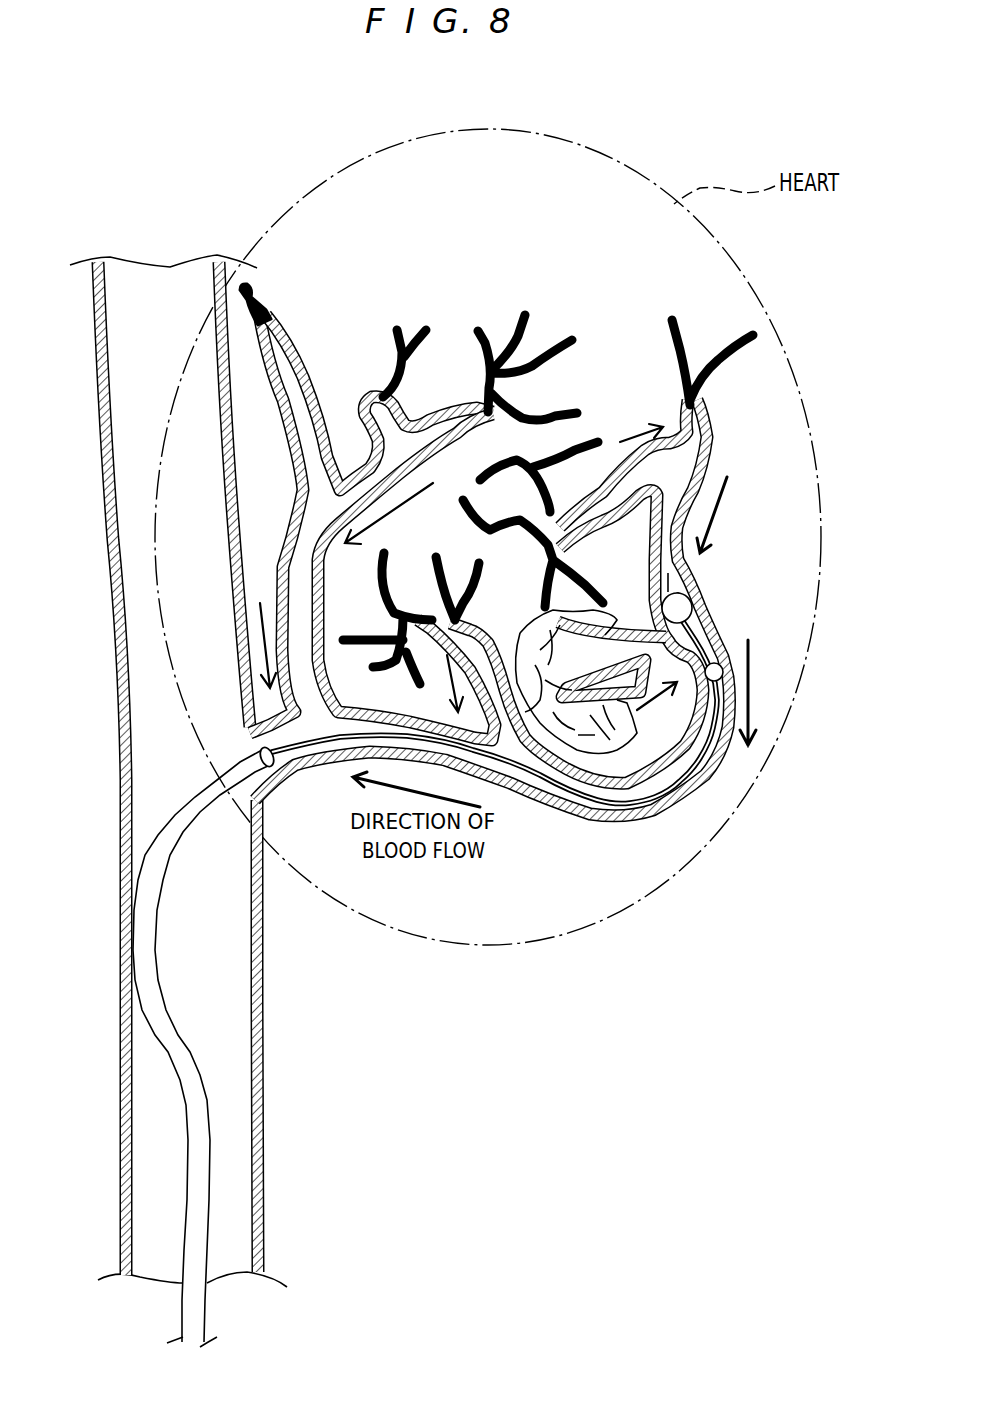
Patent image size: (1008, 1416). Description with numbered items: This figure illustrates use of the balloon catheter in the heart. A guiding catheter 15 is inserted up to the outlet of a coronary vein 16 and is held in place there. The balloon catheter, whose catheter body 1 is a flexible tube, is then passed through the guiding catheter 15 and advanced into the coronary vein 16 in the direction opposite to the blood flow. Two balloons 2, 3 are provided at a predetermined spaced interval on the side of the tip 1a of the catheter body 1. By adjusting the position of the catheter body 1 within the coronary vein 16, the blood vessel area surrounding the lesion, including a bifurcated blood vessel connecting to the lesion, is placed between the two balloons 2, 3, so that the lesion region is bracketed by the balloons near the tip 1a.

The catheter body 1 is at (573, 800).
The tip 1a is at (670, 581).
The balloon 2 is at (684, 608).
The balloon 3 is at (729, 668).
The guiding catheter 15 is at (213, 1105).
The coronary vein 16 is at (527, 800).